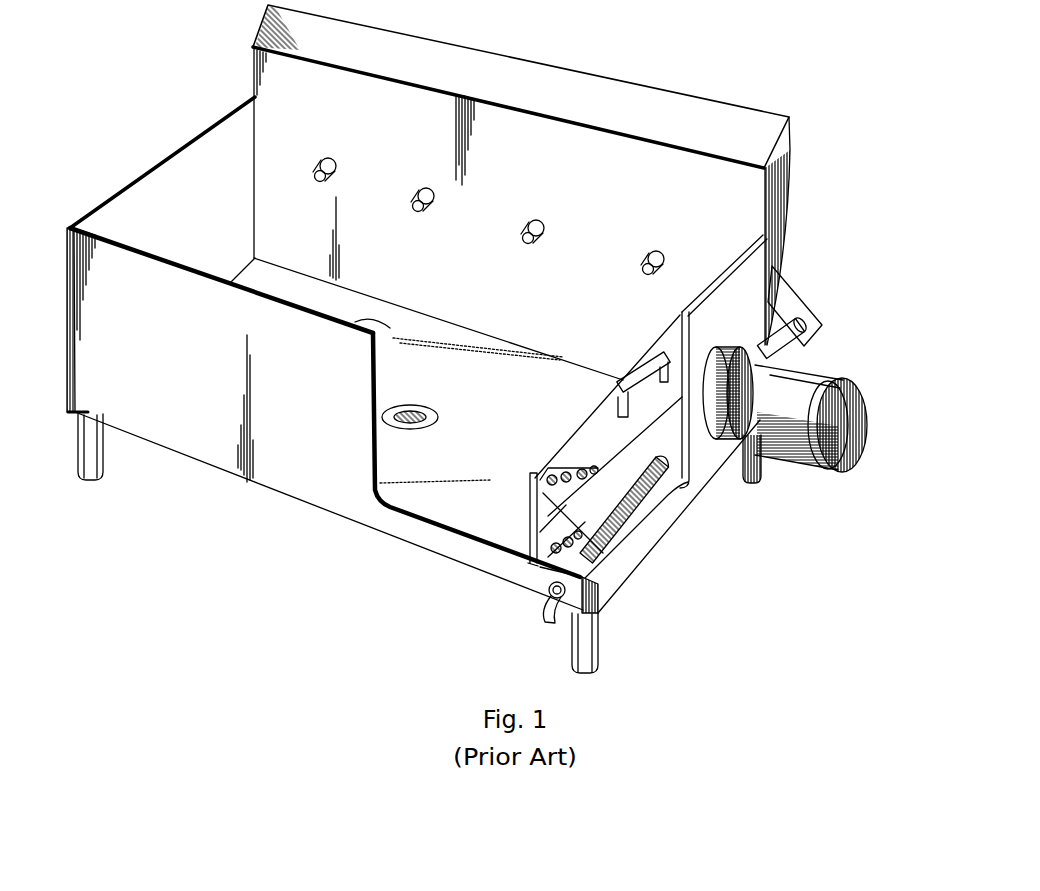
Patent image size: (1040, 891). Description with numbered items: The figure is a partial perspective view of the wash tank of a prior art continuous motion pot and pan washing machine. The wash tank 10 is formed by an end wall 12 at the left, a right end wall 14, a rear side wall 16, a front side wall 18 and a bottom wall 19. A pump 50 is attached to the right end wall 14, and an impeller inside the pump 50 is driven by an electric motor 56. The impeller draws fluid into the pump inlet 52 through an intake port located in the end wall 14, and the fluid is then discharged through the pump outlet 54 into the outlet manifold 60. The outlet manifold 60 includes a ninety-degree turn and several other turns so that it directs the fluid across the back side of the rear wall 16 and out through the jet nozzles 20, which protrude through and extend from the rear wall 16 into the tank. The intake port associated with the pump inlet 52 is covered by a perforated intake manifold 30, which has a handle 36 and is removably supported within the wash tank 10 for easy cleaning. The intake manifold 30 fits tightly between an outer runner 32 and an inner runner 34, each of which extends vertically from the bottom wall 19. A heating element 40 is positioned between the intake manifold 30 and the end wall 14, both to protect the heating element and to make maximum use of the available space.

The wash tank 10 is at (147, 104).
The end wall 12 is at (142, 217).
The right end wall 14 is at (760, 262).
The rear side wall 16 is at (638, 172).
The front side wall 18 is at (207, 432).
The bottom wall 19 is at (347, 331).
The jet nozzles 20 is at (423, 189).
The intake manifold 30 is at (603, 417).
The outer runner 32 is at (534, 470).
The inner runner 34 is at (543, 568).
The handle 36 is at (640, 363).
The heating element 40 is at (640, 520).
The pump 50 is at (831, 395).
The pump inlet 52 is at (718, 440).
The pump outlet 54 is at (800, 355).
The electric motor 56 is at (805, 465).
The outlet manifold 60 is at (802, 320).